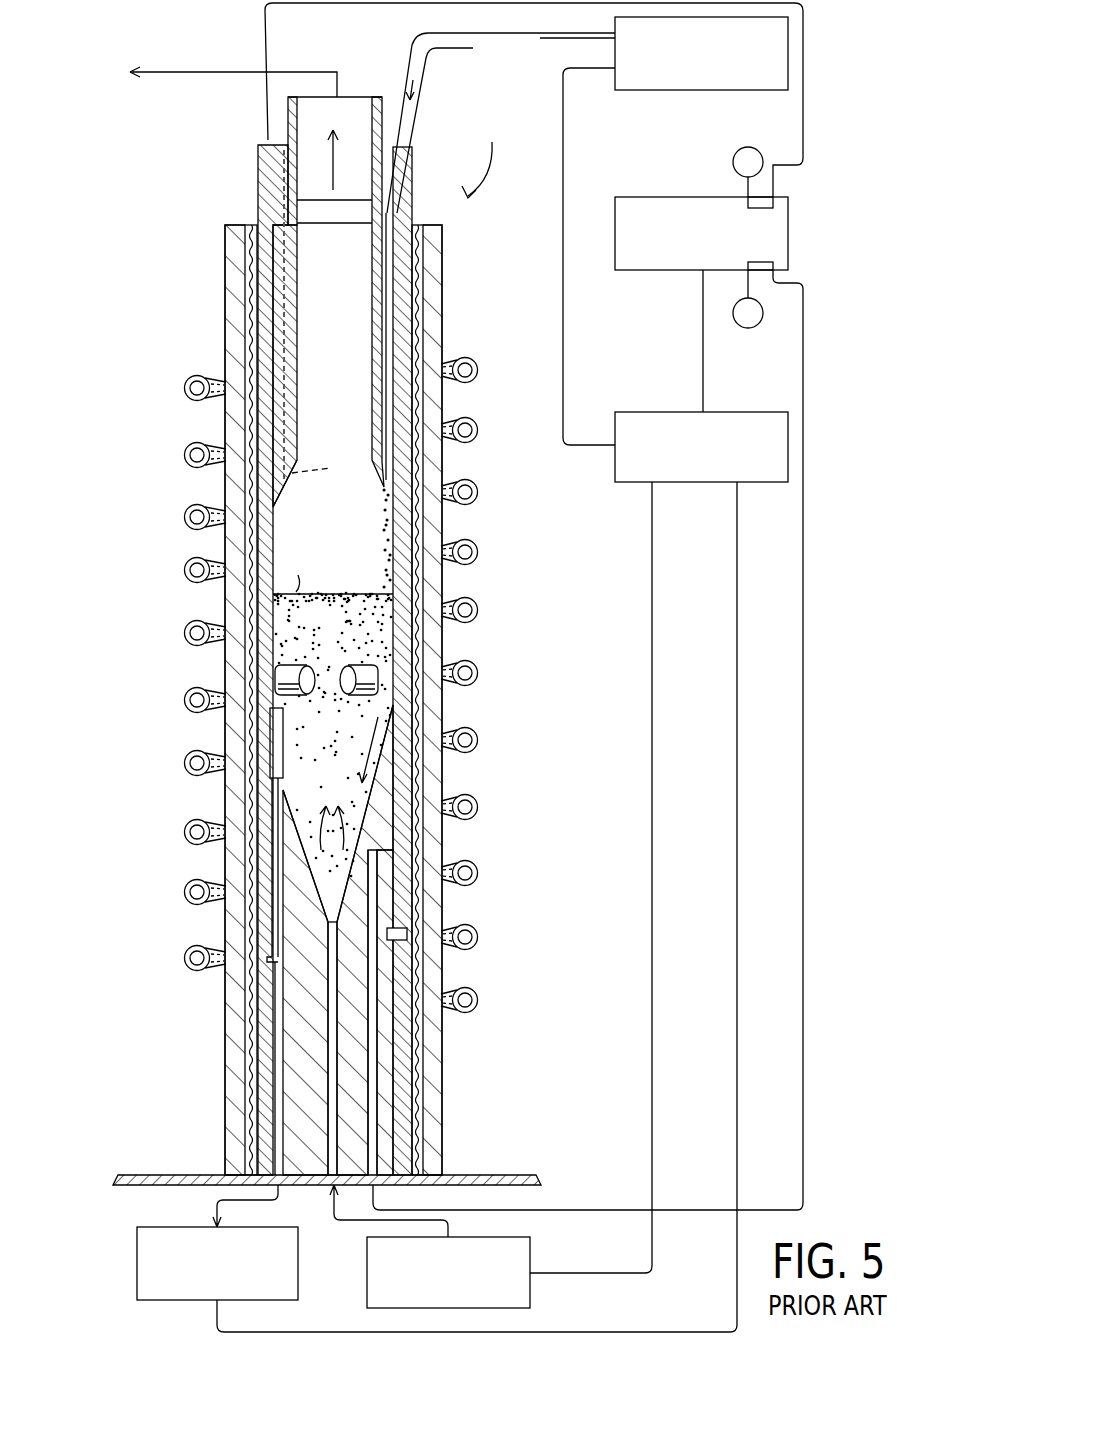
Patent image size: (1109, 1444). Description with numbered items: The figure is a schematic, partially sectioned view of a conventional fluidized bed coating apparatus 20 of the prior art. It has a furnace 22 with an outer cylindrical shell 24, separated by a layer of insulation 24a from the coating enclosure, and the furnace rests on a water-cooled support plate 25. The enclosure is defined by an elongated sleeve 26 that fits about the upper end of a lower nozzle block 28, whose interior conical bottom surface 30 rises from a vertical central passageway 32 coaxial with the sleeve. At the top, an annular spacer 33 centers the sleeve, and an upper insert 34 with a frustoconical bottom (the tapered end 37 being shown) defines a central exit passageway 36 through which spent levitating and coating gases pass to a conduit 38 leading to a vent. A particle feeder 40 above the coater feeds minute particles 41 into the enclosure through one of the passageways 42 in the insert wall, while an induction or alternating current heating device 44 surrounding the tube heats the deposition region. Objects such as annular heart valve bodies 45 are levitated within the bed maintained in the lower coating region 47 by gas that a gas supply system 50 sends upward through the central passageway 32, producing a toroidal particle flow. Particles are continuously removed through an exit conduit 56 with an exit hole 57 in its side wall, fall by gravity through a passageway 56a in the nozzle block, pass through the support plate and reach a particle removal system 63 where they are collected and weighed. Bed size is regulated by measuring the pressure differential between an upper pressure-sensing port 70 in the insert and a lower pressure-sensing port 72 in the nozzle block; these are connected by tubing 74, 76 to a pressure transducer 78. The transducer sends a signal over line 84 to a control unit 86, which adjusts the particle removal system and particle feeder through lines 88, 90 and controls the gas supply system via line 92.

The fluidized bed coating apparatus 20 is at (482, 156).
The furnace 22 is at (233, 225).
The outer cylindrical shell 24 is at (442, 292).
The layer of insulation 24a is at (420, 455).
The water-cooled support plate 25 is at (245, 315).
The elongated sleeve 26 is at (248, 418).
The lower nozzle block 28 is at (295, 1000).
The interior conical bottom surface 30 is at (340, 900).
The vertical central passageway 32 is at (334, 1078).
The annular spacer 33 is at (258, 228).
The upper insert 34 is at (297, 405).
The central exit passageway 36 is at (334, 204).
The tapered end of draft tube 37 is at (296, 463).
The conduit 38 is at (358, 100).
The particle feeder 40 is at (703, 90).
The minute particles 41 is at (380, 532).
The passageways 42 is at (372, 335).
The induction or alternating current heating device 44 is at (480, 552).
The annular heart valve bodies 45 is at (310, 597).
The lower coating region 47 is at (299, 573).
The gas supply system 50 is at (530, 1255).
The exit conduit 56 is at (277, 742).
The passageway 56a is at (258, 1073).
The exit hole 57 is at (288, 712).
The particle removal system 63 is at (162, 1227).
The upper pressure-sensing port 70 is at (322, 470).
The lower pressure-sensing port 72 is at (392, 857).
The tubing 74 is at (263, 48).
The tubing 76 is at (803, 680).
The pressure transducer 78 is at (700, 197).
The line 84 is at (703, 340).
The control unit 86 is at (730, 412).
The line 88 is at (563, 353).
The line 90 is at (737, 580).
The line 92 is at (652, 630).